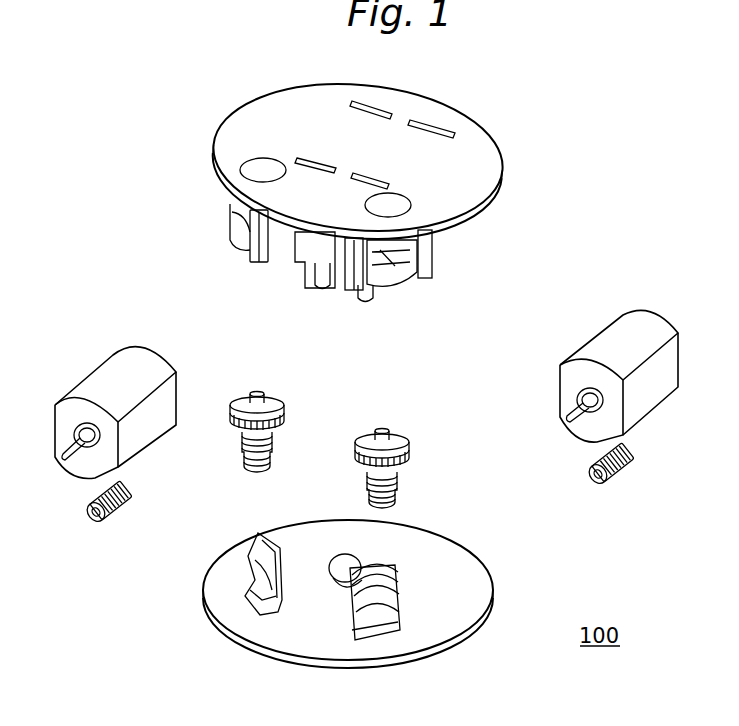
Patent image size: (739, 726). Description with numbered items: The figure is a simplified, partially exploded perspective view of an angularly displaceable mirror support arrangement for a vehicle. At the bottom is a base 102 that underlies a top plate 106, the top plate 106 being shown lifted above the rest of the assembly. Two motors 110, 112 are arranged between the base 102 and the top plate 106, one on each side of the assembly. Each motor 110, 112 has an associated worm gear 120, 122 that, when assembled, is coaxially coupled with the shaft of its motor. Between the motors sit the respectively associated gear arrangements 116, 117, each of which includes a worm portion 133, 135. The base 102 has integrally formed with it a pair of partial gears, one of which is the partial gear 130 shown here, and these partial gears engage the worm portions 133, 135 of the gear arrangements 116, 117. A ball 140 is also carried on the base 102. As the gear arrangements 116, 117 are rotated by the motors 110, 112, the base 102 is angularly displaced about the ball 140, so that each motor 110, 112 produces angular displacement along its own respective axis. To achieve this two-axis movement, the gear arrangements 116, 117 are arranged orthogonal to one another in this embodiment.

The base 102 is at (445, 567).
The top plate 106 is at (291, 114).
The motor 110 is at (128, 382).
The motor 112 is at (657, 390).
The gear arrangement 116 is at (273, 403).
The gear arrangement 117 is at (402, 442).
The worm gear 120 is at (127, 500).
The worm gear 122 is at (625, 473).
The partial gear 130 is at (255, 555).
The worm portion 133 is at (270, 452).
The worm portion 135 is at (395, 482).
The ball 140 is at (353, 550).